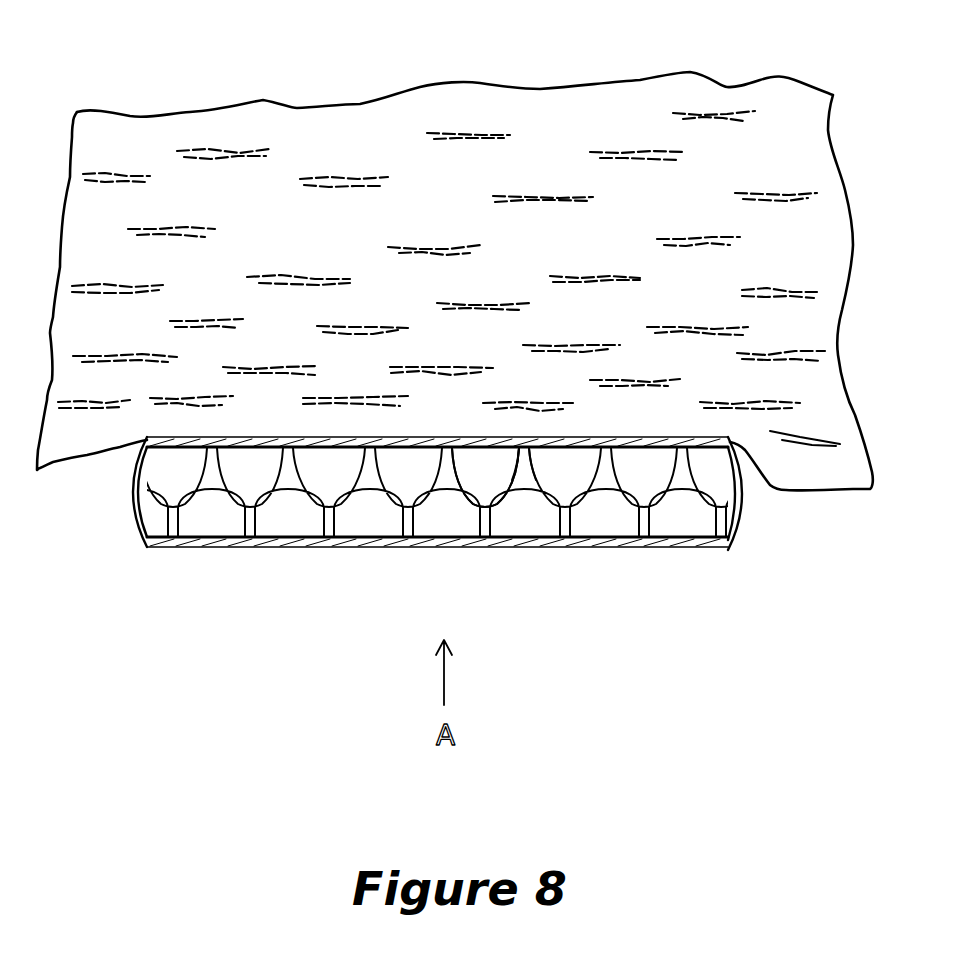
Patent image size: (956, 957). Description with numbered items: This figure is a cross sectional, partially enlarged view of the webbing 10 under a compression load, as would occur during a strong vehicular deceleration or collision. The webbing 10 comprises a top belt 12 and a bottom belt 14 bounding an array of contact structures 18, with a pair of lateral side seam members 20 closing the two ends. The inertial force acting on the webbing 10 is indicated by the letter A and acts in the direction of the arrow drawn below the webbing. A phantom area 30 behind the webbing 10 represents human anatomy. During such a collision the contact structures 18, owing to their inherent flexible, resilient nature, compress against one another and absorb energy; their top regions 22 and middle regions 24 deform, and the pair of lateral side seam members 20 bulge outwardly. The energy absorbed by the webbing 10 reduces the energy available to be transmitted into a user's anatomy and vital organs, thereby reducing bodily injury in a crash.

The webbing 10 is at (444, 521).
The top belt 12 is at (270, 414).
The bottom belt 14 is at (189, 552).
The contact structures 18 is at (298, 520).
The lateral side seam members 20 is at (139, 506).
The top regions 22 is at (516, 546).
The middle regions 24 is at (445, 520).
The phantom area 30 is at (557, 125).